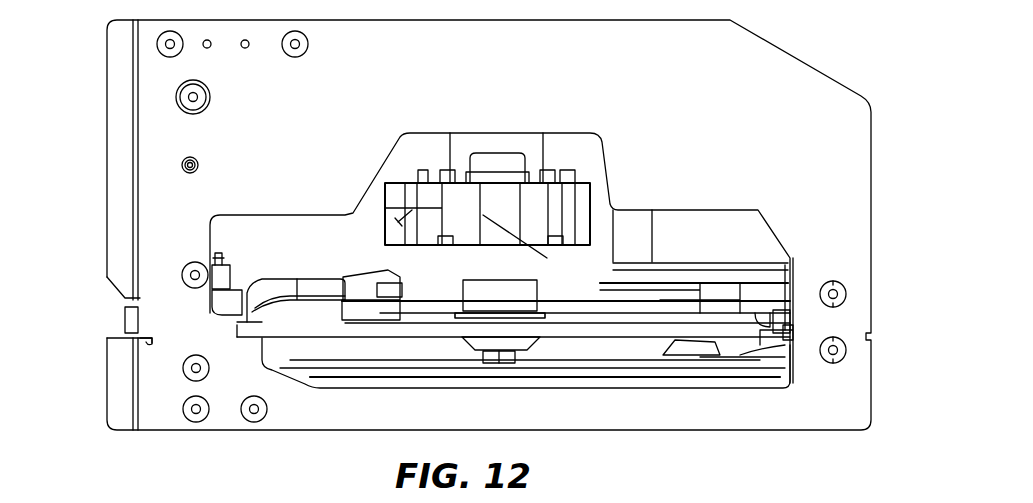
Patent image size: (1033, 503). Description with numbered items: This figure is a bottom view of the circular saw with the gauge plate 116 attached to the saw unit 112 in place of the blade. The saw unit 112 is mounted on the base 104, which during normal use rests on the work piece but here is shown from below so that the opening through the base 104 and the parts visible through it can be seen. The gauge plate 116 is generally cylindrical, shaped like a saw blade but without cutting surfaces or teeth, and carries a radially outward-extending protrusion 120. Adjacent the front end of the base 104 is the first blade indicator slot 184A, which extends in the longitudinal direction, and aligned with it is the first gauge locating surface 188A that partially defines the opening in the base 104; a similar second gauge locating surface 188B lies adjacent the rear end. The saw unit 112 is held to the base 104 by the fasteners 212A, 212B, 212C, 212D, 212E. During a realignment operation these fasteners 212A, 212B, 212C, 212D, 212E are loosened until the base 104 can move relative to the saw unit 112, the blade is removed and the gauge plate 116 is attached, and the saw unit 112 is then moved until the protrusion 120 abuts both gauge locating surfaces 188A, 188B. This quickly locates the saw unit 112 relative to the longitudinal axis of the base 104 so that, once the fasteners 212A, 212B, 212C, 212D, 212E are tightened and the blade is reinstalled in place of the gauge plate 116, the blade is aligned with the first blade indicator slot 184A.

The base 104 is at (788, 80).
The saw unit 112 is at (540, 383).
The gauge plate 116 is at (745, 330).
The protrusion 120 is at (240, 328).
The first blade indicator slot 184A is at (148, 338).
The first gauge locating surface 188A is at (253, 343).
The second gauge locating surface 188B is at (787, 337).
The fastener 212A is at (184, 373).
The fastener 212B is at (845, 295).
The fastener 212C is at (846, 350).
The fastener 212D is at (185, 94).
The fastener 212E is at (185, 268).